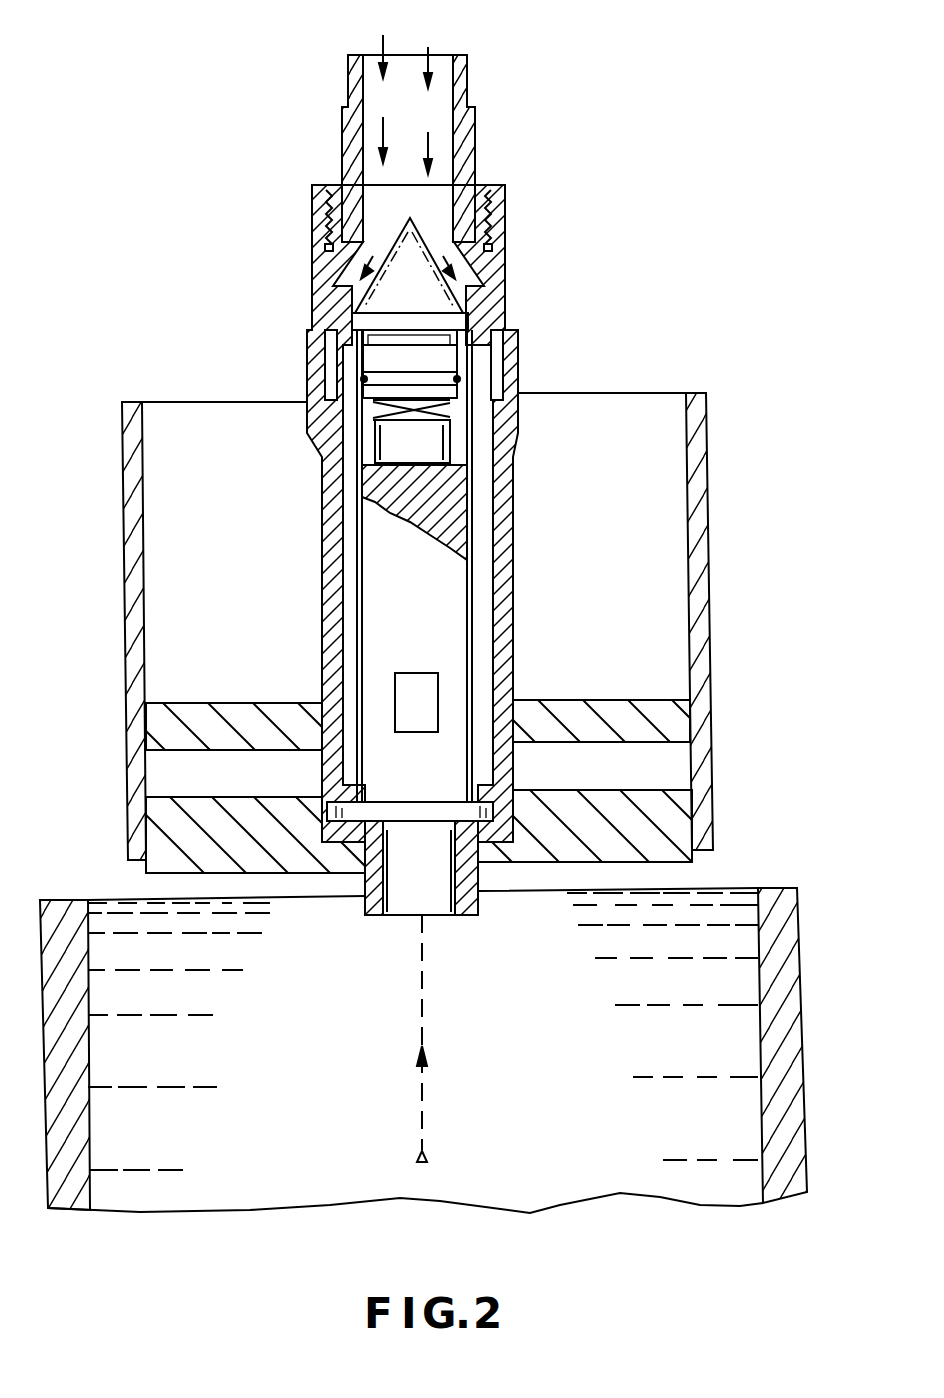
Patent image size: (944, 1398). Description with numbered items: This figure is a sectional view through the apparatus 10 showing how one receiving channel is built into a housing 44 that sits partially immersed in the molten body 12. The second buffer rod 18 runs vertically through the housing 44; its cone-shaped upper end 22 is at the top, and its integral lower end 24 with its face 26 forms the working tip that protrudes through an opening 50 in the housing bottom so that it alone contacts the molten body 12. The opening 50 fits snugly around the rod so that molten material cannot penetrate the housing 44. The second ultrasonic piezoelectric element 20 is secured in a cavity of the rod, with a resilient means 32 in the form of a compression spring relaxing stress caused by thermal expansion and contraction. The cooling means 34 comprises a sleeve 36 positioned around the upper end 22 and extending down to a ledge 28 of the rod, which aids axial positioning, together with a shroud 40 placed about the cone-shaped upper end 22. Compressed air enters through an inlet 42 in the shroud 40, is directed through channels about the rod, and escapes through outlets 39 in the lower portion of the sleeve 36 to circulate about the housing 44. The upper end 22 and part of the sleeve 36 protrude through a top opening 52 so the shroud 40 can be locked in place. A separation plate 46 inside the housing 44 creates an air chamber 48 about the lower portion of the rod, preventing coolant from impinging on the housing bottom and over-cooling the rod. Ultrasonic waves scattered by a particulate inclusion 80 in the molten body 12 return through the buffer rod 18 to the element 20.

The apparatus 10 is at (660, 171).
The molten body 12 is at (584, 1097).
The second buffer rod 18 is at (472, 608).
The second ultrasonic piezoelectric element 20 is at (432, 456).
The upper end 22 is at (398, 243).
The lower end 24 is at (395, 915).
The face 26 is at (440, 915).
The ledge 28 is at (440, 790).
The resilient means 32 is at (376, 405).
The cooling means 34 is at (470, 92).
The sleeve 36 is at (513, 500).
The outlet 39 is at (420, 683).
The shroud 40 is at (348, 95).
The inlet 42 is at (407, 57).
The housing 44 is at (707, 500).
The separation plate 46 is at (588, 700).
The air chamber 48 is at (682, 765).
The opening 50 is at (419, 868).
The top opening 52 is at (652, 402).
The particulate inclusion 80 is at (416, 1160).